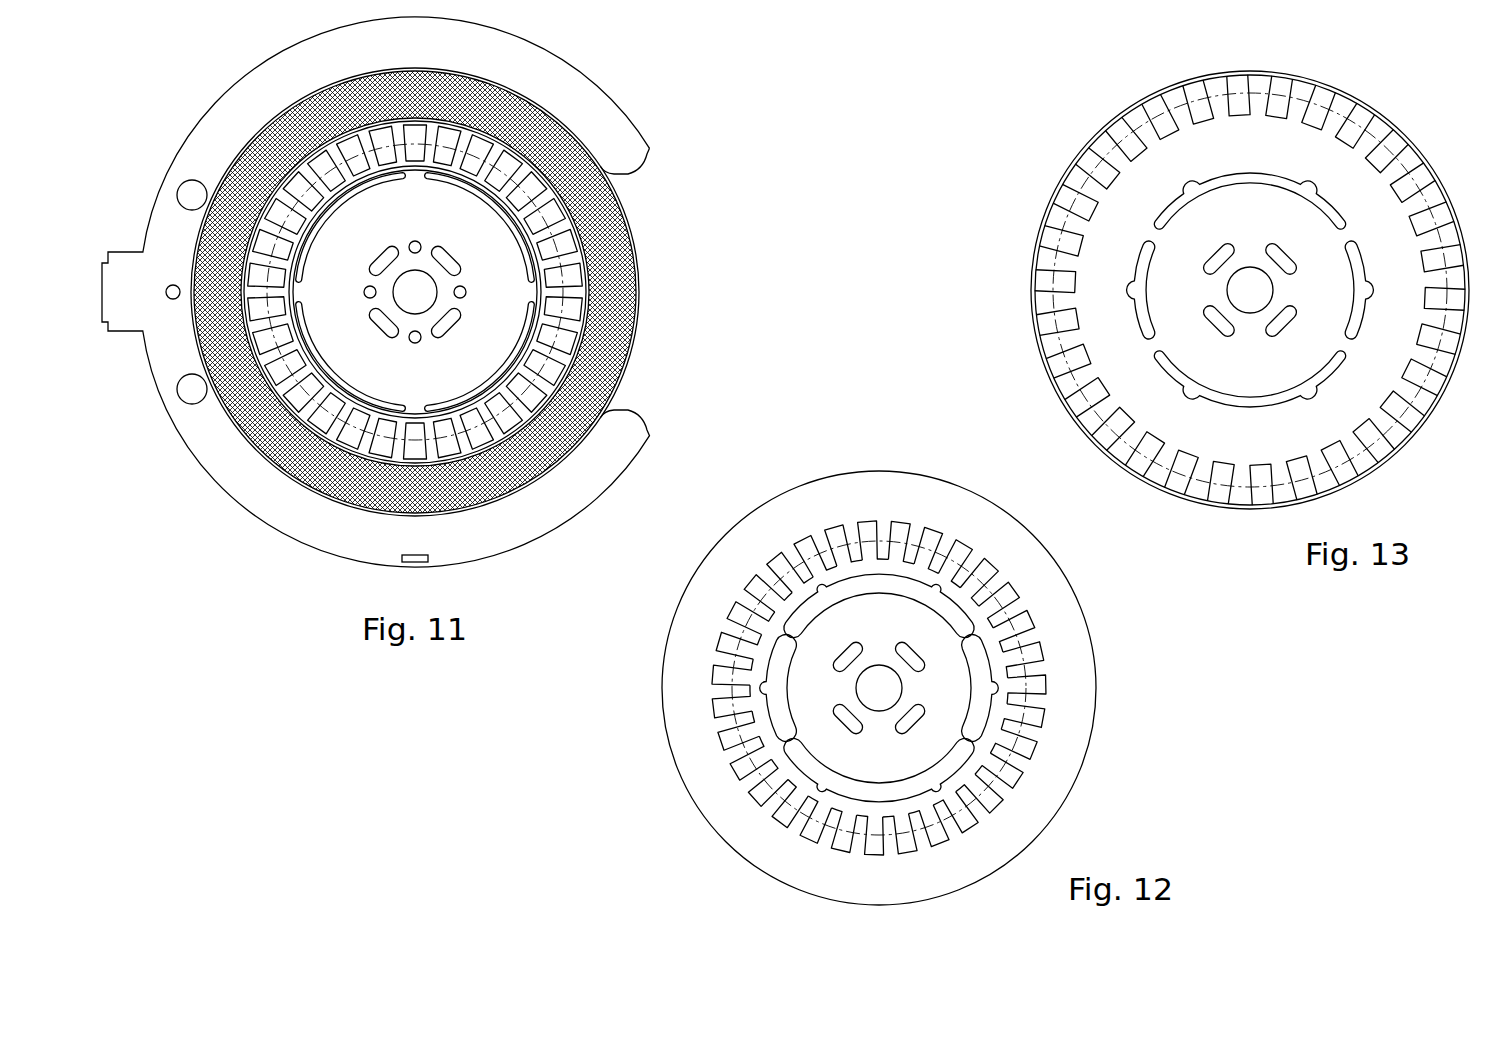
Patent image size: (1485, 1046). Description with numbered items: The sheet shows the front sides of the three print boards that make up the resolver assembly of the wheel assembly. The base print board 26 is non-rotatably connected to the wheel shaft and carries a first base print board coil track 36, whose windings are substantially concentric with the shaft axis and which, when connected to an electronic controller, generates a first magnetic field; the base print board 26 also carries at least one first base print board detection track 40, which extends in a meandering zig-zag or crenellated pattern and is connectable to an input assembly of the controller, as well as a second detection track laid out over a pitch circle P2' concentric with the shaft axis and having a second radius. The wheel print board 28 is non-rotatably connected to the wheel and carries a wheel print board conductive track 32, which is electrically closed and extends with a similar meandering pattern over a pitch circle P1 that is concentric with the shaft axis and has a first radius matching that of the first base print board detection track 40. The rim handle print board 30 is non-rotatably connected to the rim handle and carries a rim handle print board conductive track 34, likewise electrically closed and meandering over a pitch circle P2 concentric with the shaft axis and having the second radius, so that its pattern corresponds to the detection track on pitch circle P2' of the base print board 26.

In FIG. 11, the base print board 26 is at (688, 160).
In FIG. 11, the first base print board coil track 36 is at (630, 232).
In FIG. 11, the first base print board detection track 40 is at (586, 269).
In FIG. 11, the pitch circle P2' is at (498, 292).
In FIG. 13, the wheel print board 28 is at (1025, 165).
In FIG. 13, the wheel print board conductive track 32 is at (1047, 211).
In FIG. 13, the pitch circle P1 is at (1040, 350).
In FIG. 12, the rim handle print board 30 is at (1110, 608).
In FIG. 12, the rim handle print board conductive track 34 is at (1095, 690).
In FIG. 12, the pitch circle P2 is at (817, 688).